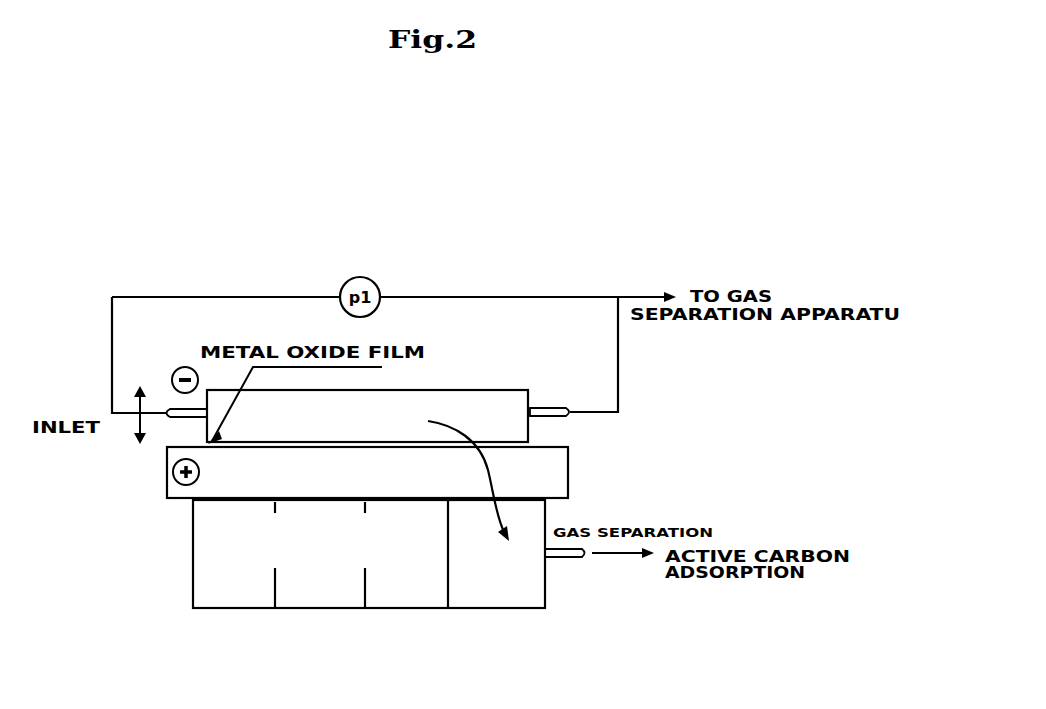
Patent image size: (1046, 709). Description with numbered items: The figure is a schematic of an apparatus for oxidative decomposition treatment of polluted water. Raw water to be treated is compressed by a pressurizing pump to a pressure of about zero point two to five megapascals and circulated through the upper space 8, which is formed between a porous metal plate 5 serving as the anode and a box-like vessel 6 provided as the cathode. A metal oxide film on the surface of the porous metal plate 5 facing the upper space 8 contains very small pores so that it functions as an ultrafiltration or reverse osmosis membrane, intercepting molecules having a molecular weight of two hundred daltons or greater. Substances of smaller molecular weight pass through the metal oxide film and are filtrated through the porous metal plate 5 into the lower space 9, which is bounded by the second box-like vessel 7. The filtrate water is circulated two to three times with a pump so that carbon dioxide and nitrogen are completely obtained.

The porous metal plate 5 is at (553, 473).
The box-like vessel 6 is at (458, 390).
The box-like vessel 7 is at (332, 610).
The upper space 8 is at (497, 400).
The lower space 9 is at (298, 587).